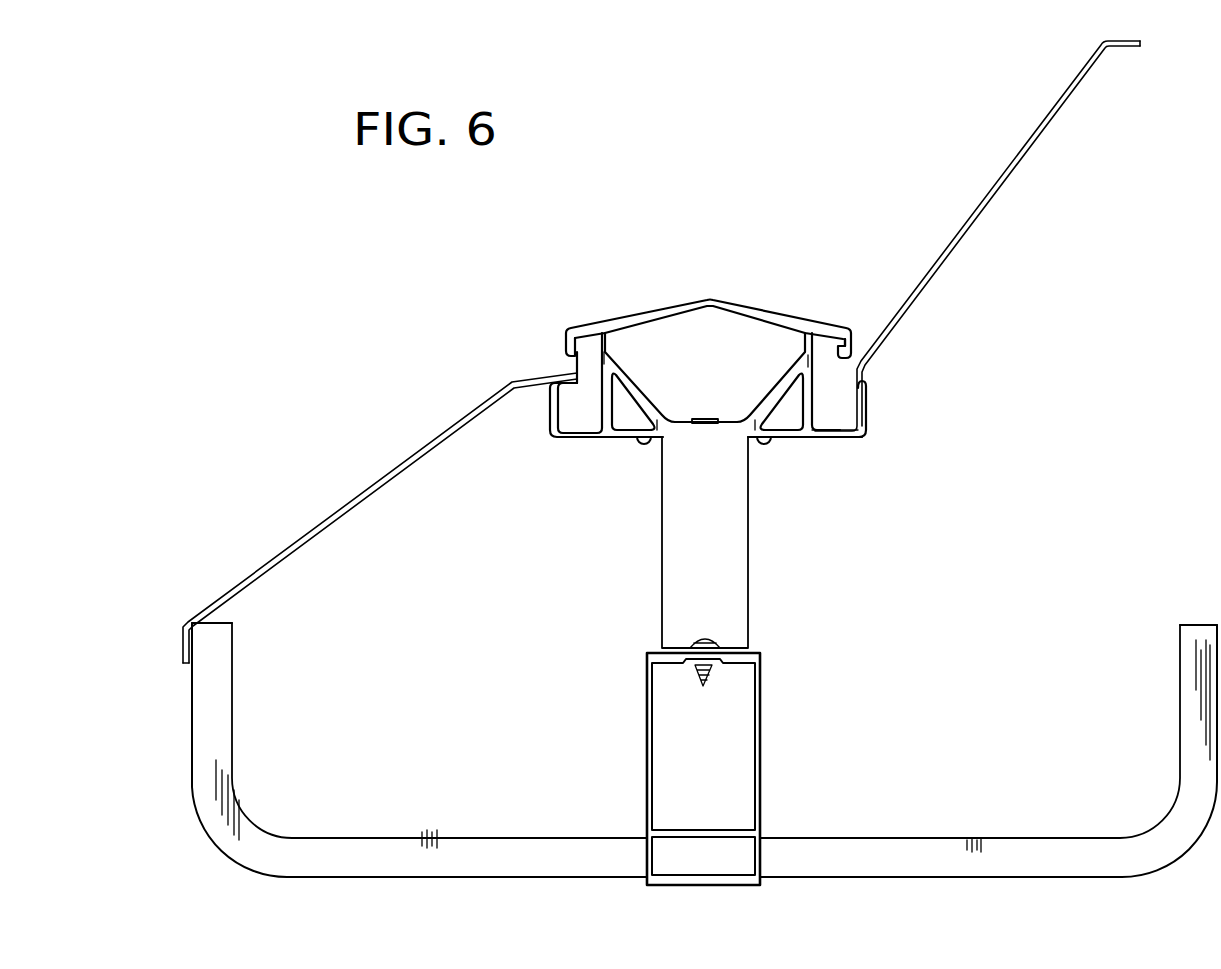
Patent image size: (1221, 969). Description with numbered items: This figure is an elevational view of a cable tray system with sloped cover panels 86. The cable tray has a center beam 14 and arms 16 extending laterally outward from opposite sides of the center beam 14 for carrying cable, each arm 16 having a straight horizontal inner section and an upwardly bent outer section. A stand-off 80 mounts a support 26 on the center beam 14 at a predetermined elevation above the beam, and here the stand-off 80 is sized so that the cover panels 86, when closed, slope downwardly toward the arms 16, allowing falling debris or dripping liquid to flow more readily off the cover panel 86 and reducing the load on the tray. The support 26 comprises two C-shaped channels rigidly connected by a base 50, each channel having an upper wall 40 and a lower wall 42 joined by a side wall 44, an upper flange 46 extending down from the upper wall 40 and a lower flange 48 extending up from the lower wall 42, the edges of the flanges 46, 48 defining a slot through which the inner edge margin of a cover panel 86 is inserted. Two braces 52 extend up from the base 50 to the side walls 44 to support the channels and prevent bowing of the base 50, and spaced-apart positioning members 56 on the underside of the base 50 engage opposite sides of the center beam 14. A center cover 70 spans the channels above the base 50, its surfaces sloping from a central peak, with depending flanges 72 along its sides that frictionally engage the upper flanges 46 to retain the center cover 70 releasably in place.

The center beam 14 is at (762, 705).
The arm 16 is at (365, 830).
The support 26 is at (563, 441).
The upper wall 40 is at (829, 327).
The lower wall 42 is at (838, 441).
The side wall 44 is at (808, 398).
The upper flange 46 is at (851, 342).
The lower flange 48 is at (864, 398).
The base 50 is at (620, 441).
The brace 52 is at (722, 368).
The positioning member 56 is at (765, 441).
The center cover 70 is at (724, 303).
The depending flange 72 is at (569, 352).
The stand-off 80 is at (750, 548).
The cover panel 86 is at (332, 518).